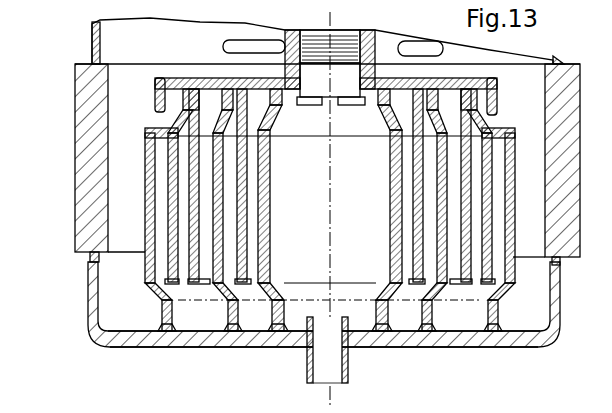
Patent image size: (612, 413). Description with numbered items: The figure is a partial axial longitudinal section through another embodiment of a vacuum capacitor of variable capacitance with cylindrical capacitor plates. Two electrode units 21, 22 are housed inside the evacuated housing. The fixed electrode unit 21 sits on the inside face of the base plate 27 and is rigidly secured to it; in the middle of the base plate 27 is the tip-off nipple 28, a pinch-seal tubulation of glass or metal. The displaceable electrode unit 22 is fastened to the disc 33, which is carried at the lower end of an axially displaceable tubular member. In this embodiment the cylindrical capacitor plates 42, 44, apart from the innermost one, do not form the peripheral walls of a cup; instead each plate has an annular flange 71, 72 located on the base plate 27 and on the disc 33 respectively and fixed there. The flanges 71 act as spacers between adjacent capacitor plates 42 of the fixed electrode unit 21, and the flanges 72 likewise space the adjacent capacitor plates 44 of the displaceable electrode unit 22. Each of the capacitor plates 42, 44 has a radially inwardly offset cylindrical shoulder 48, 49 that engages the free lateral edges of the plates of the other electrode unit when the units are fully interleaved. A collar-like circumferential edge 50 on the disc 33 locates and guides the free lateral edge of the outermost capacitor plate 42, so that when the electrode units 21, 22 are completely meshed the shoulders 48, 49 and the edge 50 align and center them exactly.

The electrode unit 21 is at (291, 327).
The electrode unit 22 is at (150, 116).
The base plate 27 is at (138, 339).
The tip-off nipple 28 is at (307, 356).
The disc 33 is at (178, 80).
The capacitor plates 42 is at (512, 250).
The capacitor plates 44 is at (173, 221).
The cylindrical shoulders 48 is at (258, 315).
The cylindrical shoulders 49 is at (268, 126).
The circumferential edge 50 is at (157, 85).
The annular flanges 71 is at (248, 348).
The annular flanges 72 is at (262, 90).